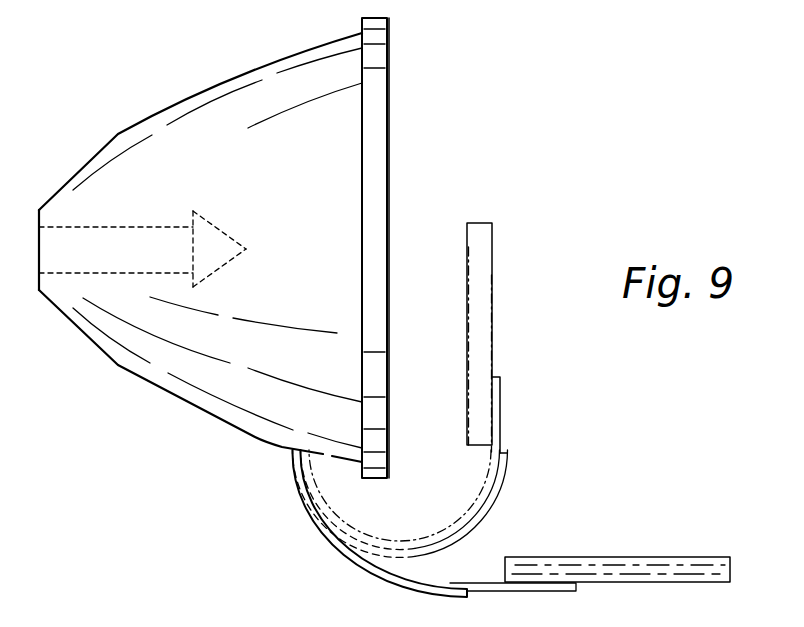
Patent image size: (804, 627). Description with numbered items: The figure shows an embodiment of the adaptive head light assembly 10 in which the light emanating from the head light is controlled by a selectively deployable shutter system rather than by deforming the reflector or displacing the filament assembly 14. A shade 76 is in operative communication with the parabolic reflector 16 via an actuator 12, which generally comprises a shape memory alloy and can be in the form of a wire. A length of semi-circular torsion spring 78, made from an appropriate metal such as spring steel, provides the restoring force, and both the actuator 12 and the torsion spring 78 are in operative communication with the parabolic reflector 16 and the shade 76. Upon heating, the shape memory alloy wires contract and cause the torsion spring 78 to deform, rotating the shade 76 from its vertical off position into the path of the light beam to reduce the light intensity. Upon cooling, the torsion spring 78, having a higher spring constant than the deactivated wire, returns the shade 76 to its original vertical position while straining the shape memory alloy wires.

The adaptive head light assembly 10 is at (560, 153).
The actuator 12 is at (386, 586).
The filament assembly 14 is at (208, 247).
The parabolic reflector 16 is at (282, 95).
The shade 76 is at (473, 315).
The semi-circular torsion spring 78 is at (450, 583).